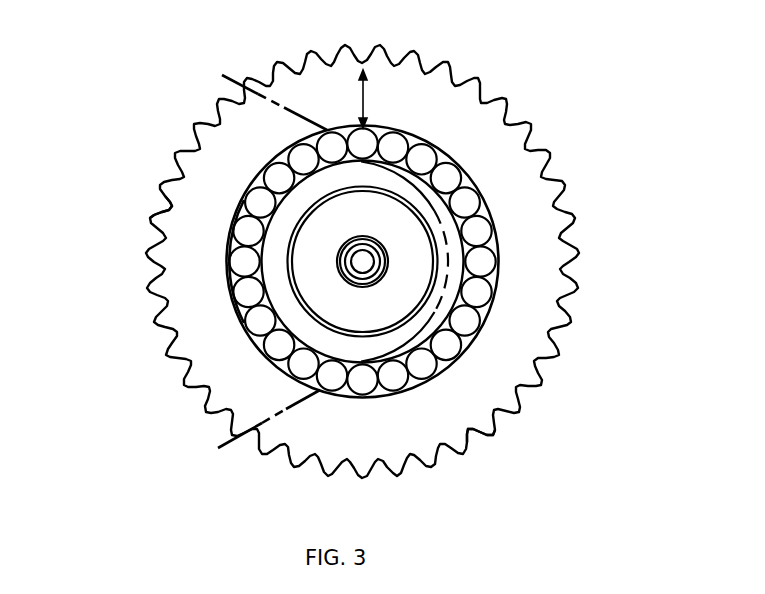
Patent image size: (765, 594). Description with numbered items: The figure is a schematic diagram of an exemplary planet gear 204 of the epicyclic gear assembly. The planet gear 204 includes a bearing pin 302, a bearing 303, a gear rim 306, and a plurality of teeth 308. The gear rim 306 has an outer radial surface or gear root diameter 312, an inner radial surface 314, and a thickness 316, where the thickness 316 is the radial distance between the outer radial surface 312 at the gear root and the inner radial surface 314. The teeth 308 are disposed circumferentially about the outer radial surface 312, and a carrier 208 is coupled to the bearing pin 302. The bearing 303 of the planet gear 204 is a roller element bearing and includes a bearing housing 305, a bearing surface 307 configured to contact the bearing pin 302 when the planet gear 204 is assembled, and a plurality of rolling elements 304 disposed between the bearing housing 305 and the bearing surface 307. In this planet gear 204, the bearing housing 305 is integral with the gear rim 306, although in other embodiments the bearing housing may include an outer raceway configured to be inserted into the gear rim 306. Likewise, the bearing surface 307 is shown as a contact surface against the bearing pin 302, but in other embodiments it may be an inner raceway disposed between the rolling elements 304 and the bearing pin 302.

The planet gear 204 is at (212, 55).
The carrier 208 is at (270, 412).
The bearing pin 302 is at (407, 243).
The bearing 303 is at (272, 152).
The rolling elements 304 is at (395, 147).
The bearing housing 305 is at (240, 203).
The gear rim 306 is at (522, 348).
The bearing surface 307 is at (338, 153).
The teeth 308 is at (160, 183).
The outer radial surface 312 is at (495, 425).
The inner radial surface 314 is at (240, 313).
The thickness 316 is at (372, 97).